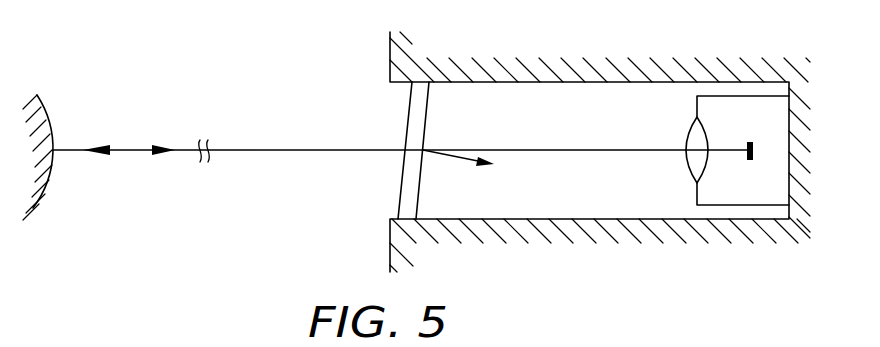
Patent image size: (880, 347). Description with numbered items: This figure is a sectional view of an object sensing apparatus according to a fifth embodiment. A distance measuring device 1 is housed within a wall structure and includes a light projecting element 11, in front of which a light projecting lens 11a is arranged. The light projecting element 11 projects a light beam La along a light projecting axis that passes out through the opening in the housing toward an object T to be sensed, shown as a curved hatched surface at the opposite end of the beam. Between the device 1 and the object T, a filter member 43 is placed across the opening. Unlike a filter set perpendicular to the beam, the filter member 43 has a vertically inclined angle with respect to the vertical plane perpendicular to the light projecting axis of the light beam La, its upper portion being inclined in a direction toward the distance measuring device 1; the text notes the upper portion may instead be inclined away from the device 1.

The distance measuring device 1 is at (772, 110).
The light projecting element 11 is at (753, 150).
The light projecting lens 11a is at (692, 120).
The filter member 43 is at (412, 117).
The object T is at (48, 122).
The light beam La is at (262, 150).